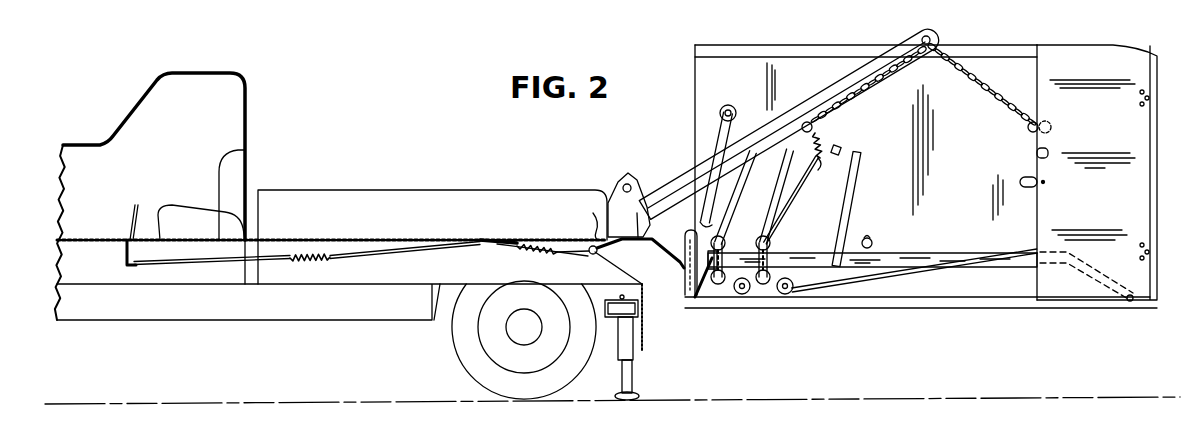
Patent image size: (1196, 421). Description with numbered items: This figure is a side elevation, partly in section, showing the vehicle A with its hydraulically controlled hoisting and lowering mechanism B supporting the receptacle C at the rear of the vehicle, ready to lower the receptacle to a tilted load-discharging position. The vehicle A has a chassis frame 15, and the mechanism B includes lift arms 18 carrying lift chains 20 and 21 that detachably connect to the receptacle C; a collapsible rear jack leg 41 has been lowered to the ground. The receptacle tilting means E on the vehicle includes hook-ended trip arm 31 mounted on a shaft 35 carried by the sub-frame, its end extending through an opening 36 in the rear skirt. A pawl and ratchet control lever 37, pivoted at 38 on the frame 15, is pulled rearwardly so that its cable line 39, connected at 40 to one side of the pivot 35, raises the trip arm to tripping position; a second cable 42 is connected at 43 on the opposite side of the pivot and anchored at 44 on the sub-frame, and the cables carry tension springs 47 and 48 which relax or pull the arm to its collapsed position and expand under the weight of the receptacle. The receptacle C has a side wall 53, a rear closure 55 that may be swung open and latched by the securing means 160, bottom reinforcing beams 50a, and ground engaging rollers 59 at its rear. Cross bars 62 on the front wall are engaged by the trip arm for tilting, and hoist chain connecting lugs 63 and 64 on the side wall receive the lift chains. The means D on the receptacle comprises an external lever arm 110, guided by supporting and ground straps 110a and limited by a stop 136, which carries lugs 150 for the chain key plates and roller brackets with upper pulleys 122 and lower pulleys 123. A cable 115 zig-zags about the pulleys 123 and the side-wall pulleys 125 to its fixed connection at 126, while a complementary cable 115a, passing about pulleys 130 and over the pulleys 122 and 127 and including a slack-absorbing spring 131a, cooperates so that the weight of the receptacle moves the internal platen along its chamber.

The vehicle A is at (145, 310).
The hoisting and lowering mechanism B is at (822, 97).
The receptacle C is at (1012, 70).
The means cooperating with the hoisting and lowering means D is at (900, 255).
The receptacle tilting means E is at (230, 274).
The chassis frame 15 is at (190, 277).
The lift arms 18 is at (869, 60).
The lift chain 20 is at (455, 272).
The lift chain 21 is at (869, 89).
The trip arm 31 is at (629, 205).
The shaft 35 is at (598, 276).
The openings 36 is at (627, 252).
The pawl and ratchet control lever 37 is at (142, 190).
The pivot 38 is at (126, 240).
The cable line 39 is at (392, 262).
The cable connection 40 is at (585, 224).
The rear jack leg 41 is at (622, 350).
The second cable 42 is at (566, 256).
The cable connection 43 is at (590, 258).
The connection 44 is at (487, 240).
The tension spring 47 is at (312, 265).
The tension spring 48 is at (530, 253).
The structural beams 50a is at (928, 306).
The side wall 53 is at (697, 72).
The rear closure 55 is at (1135, 192).
The ground engaging rollers 59 is at (1148, 304).
The cross bars 62 is at (690, 248).
The hoist chain connecting lug 63 is at (1030, 128).
The hoist chain connecting lug 64 is at (822, 132).
The lever arm 110 is at (955, 255).
The supporting and ground straps 110a is at (849, 196).
The cable 115 is at (856, 284).
The complementary cable 115a is at (791, 208).
The sheaves or pulleys 122 is at (727, 240).
The sheaves or pulleys 123 is at (717, 300).
The sheaves or pulleys 125 is at (785, 296).
The cable connection 126 is at (698, 298).
The sheaves or pulleys 127 is at (751, 99).
The pulleys or sheaves 130 is at (695, 193).
The spring 131a is at (800, 169).
The stop 136 is at (843, 150).
The lugs 150 is at (871, 240).
The latching or securing means 160 is at (1037, 152).